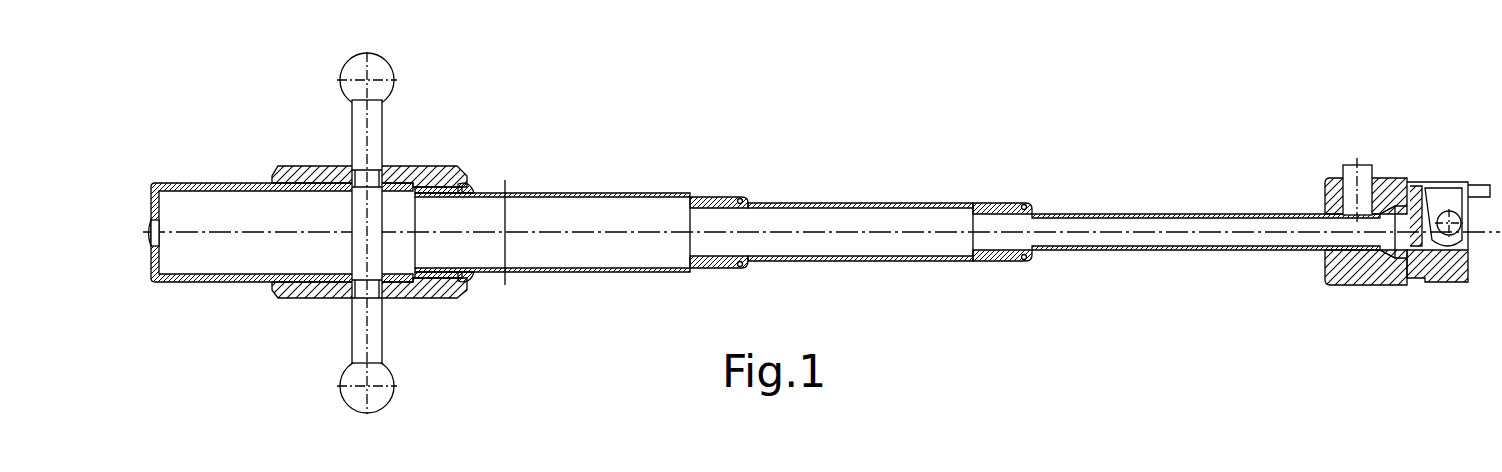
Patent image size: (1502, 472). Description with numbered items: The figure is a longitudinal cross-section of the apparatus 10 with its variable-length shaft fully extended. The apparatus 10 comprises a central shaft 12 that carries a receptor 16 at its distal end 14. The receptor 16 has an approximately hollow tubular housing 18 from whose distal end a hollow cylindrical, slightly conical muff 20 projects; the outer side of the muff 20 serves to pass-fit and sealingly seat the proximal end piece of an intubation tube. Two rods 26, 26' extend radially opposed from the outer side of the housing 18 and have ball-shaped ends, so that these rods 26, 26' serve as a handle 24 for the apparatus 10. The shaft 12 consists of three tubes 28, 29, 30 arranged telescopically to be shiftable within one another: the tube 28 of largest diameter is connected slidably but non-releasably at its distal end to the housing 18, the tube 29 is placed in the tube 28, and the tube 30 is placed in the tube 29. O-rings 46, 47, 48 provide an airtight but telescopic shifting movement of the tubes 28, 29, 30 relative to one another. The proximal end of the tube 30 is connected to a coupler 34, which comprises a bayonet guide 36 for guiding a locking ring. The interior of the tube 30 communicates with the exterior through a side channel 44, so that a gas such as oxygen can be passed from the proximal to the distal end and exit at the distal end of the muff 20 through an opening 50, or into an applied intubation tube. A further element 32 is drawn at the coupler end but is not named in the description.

The apparatus 10 is at (892, 175).
The central shaft 12 is at (963, 288).
The distal end 14 is at (437, 187).
The receptor 16 is at (253, 296).
The housing 18 is at (316, 290).
The muff 20 is at (209, 183).
The handle 24 is at (377, 140).
The rod 26 is at (400, 384).
The rod 26' is at (341, 87).
The tube 28 is at (577, 192).
The tube 29 is at (790, 204).
The tube 30 is at (1113, 213).
The end piece 32 is at (1333, 285).
The coupler 34 is at (1393, 273).
The bayonet guide 36 is at (1440, 205).
The side channel 44 is at (1353, 188).
The O-ring 46 is at (468, 187).
The O-ring 47 is at (745, 198).
The O-ring 48 is at (1025, 205).
The opening 50 is at (146, 240).